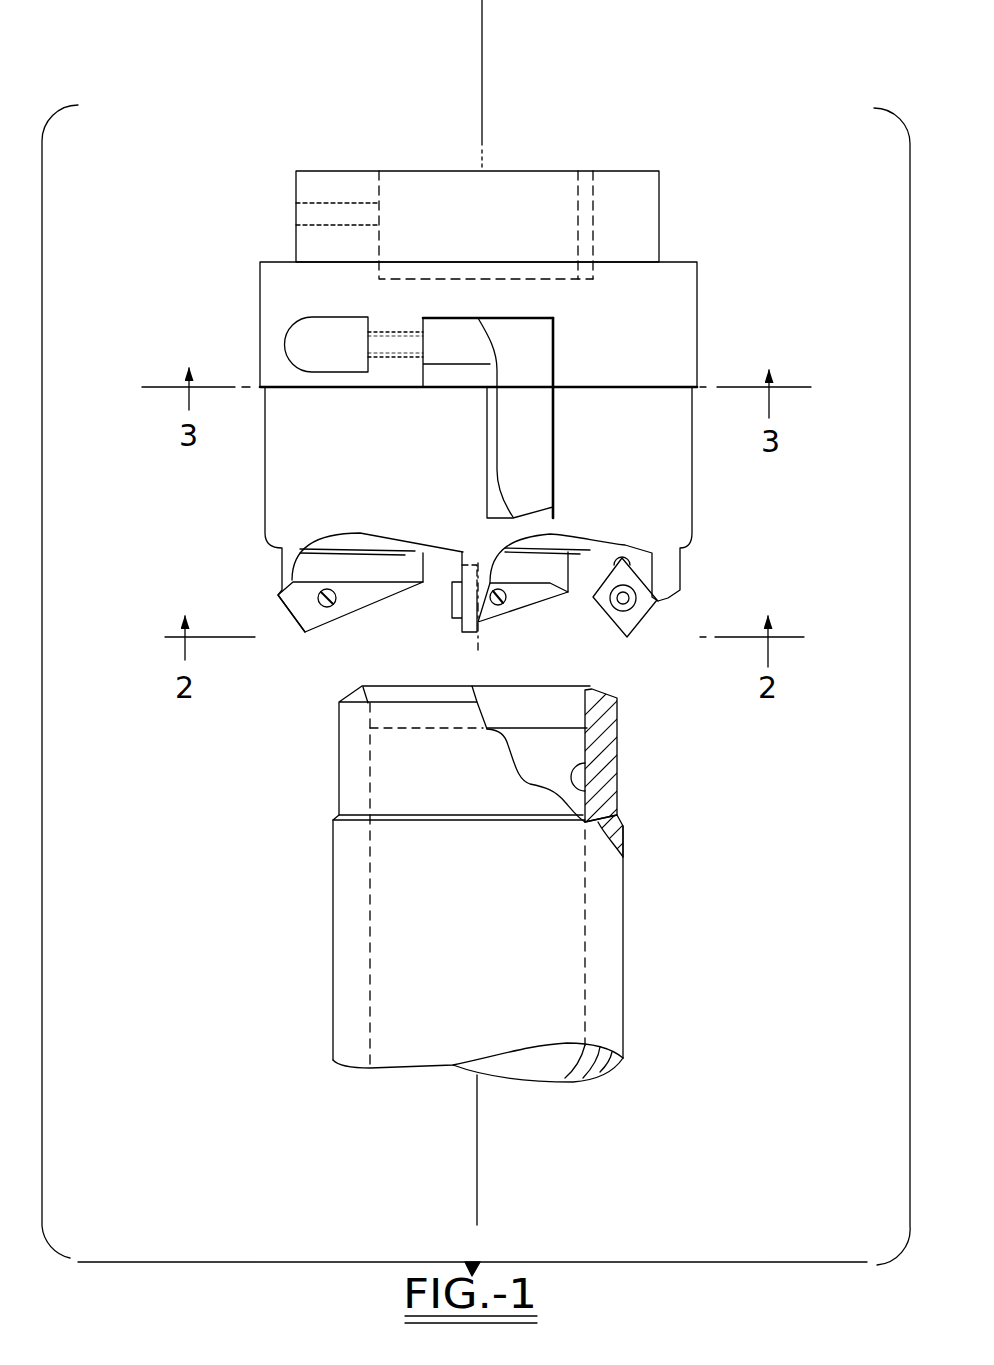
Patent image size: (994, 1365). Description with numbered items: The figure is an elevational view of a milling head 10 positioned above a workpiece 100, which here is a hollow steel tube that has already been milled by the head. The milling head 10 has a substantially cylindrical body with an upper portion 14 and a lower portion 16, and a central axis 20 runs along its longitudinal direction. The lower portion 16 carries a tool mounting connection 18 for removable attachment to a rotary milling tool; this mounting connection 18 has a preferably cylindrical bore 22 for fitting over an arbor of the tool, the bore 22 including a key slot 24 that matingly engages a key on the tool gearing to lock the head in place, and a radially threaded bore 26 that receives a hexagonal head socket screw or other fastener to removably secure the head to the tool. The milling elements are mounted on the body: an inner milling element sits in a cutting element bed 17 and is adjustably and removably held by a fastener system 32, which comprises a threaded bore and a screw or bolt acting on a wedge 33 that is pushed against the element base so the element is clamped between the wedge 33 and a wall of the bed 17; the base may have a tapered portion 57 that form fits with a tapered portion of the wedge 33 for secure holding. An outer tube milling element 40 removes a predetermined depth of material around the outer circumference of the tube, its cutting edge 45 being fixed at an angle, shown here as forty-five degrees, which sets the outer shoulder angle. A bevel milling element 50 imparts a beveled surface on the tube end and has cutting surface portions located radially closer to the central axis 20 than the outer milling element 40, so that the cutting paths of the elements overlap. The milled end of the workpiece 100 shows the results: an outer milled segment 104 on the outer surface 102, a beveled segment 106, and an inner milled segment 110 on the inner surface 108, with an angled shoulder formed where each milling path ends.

The milling head 10 is at (238, 277).
The upper portion 14 is at (697, 491).
The lower portion 16 is at (697, 286).
The cutting element bed 17 is at (437, 325).
The tool mounting connection 18 is at (327, 171).
The central axis 20 is at (482, 40).
The bore 22 is at (377, 203).
The key slot 24 is at (588, 173).
The radially threaded bore 26 is at (296, 203).
The fastener system 32 is at (413, 362).
The wedge 33 is at (463, 332).
The outer tube milling element 40 is at (305, 633).
The cutting edge 45 is at (612, 620).
The bevel milling element 50 is at (542, 437).
The tapered portion 57 is at (490, 345).
The workpiece 100 is at (449, 866).
The outer surface 102 is at (623, 943).
The outer milled segment 104 is at (618, 772).
The beveled segment 106 is at (613, 693).
The inner surface 108 is at (618, 813).
The inner milled segment 110 is at (585, 717).